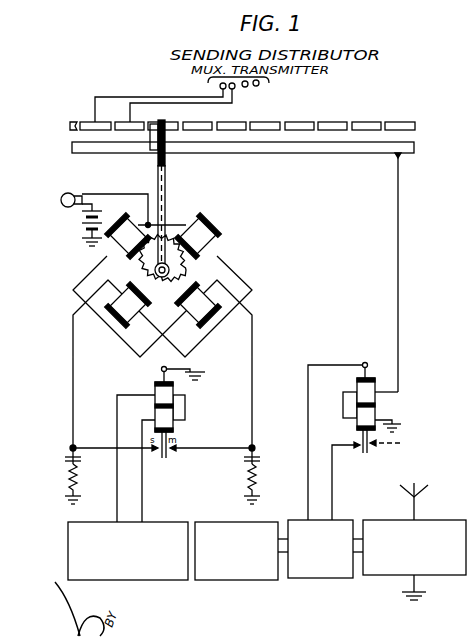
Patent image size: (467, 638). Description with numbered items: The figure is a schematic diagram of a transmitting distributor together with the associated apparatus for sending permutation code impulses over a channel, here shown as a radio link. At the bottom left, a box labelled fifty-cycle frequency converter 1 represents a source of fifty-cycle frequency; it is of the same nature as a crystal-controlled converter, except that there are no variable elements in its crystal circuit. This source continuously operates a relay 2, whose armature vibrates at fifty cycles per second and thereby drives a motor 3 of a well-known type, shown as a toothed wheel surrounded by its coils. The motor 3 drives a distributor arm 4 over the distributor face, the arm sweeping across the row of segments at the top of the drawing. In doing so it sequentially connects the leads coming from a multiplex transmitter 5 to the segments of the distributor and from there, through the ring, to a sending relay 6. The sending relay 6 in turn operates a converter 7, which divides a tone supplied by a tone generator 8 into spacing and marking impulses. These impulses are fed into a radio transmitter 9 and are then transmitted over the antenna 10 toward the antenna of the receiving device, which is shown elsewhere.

The 50-cycle frequency converter 1 is at (158, 520).
The relay 2 is at (154, 406).
The motor 3 is at (190, 264).
The distributor arm 4 is at (166, 183).
The multiplex transmitter 5 is at (262, 80).
The sending relay 6 is at (377, 403).
The converter 7 is at (302, 518).
The tone generator 8 is at (226, 520).
The radio transmitter 9 is at (382, 518).
The antenna 10 is at (426, 494).